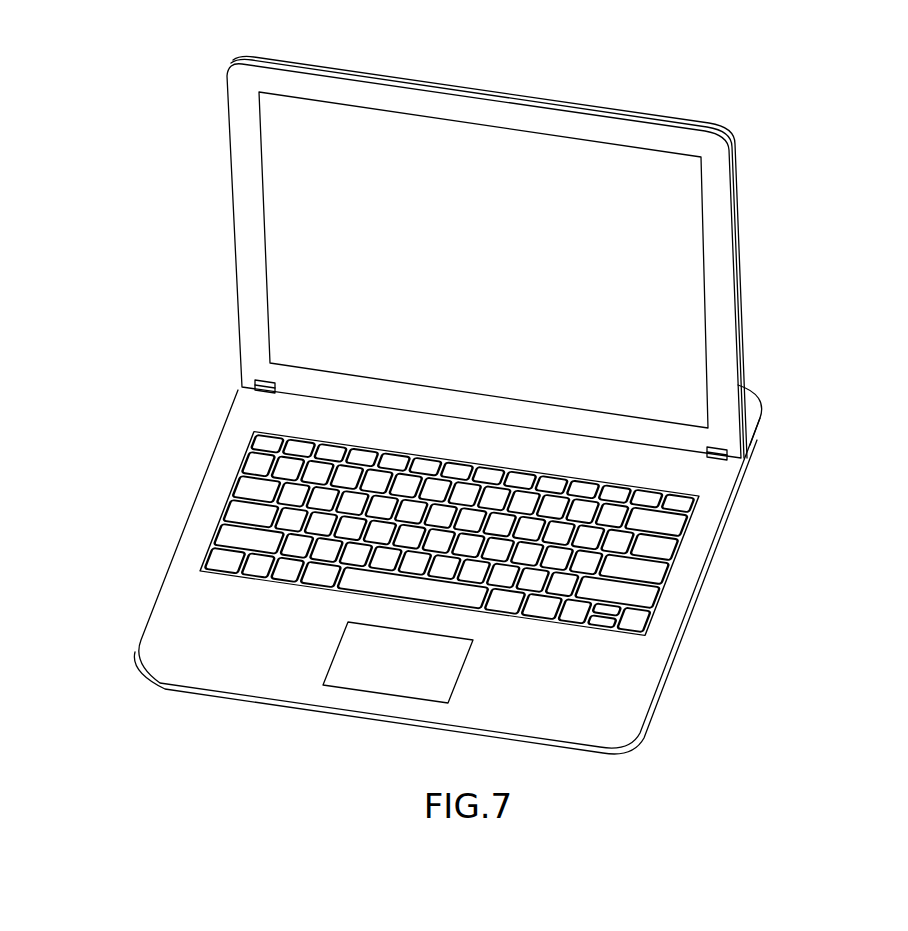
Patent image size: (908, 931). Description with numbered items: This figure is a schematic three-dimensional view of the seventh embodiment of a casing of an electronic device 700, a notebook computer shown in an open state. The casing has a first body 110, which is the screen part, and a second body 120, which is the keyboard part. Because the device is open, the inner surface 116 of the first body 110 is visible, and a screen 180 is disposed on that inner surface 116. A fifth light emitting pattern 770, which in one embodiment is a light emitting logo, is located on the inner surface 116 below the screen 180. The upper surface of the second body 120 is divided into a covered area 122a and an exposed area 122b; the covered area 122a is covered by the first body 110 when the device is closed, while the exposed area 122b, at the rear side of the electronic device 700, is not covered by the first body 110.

The electronic device 700 is at (140, 332).
The first body 110 is at (608, 124).
The screen 180 is at (643, 215).
The inner surface 116 is at (679, 272).
The fifth light emitting pattern 770 is at (446, 402).
The second body 120 is at (165, 532).
The covered area 122a is at (633, 677).
The exposed area 122b is at (752, 411).